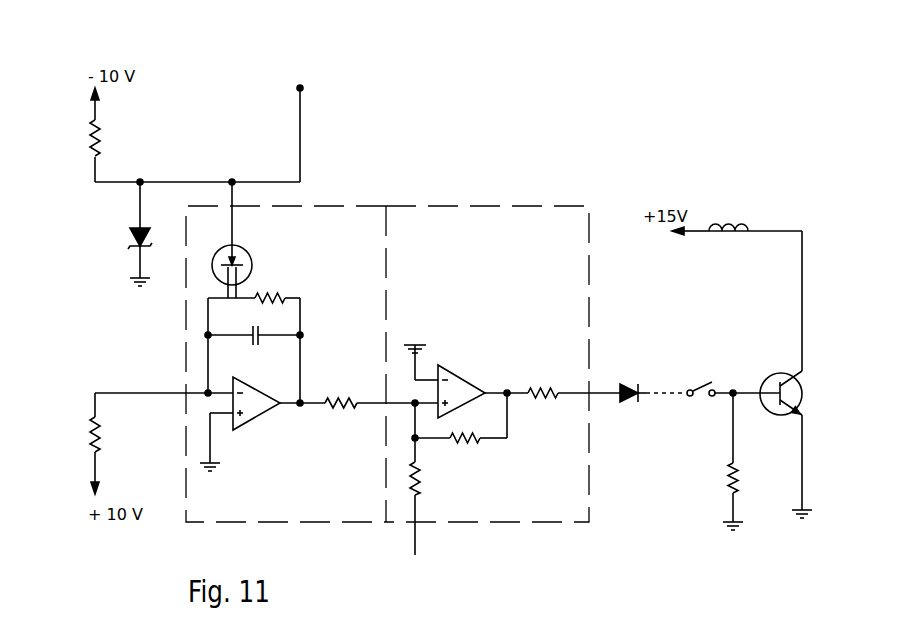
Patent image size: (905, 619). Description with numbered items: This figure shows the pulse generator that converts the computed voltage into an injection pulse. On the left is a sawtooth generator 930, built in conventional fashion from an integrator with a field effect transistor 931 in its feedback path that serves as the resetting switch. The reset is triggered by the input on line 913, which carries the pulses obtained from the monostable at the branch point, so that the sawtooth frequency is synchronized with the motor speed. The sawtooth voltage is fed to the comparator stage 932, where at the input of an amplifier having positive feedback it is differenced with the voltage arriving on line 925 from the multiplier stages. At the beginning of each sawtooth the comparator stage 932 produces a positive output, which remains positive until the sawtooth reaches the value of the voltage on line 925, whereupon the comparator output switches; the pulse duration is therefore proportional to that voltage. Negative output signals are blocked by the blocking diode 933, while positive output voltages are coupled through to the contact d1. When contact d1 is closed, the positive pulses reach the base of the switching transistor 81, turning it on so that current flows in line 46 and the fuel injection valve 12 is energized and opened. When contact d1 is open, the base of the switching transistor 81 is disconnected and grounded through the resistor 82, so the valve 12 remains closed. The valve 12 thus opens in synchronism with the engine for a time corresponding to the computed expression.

The line 913 is at (303, 86).
The field effect transistor 931 is at (233, 180).
The sawtooth generator 930 is at (288, 508).
The line 925 is at (416, 537).
The comparator stage 932 is at (532, 507).
The blocking diode 933 is at (625, 404).
The contact d1 is at (700, 397).
The fuel injection valve 12 is at (714, 240).
The line 46 is at (802, 326).
The switching transistor 81 is at (802, 393).
The resistor 82 is at (745, 487).